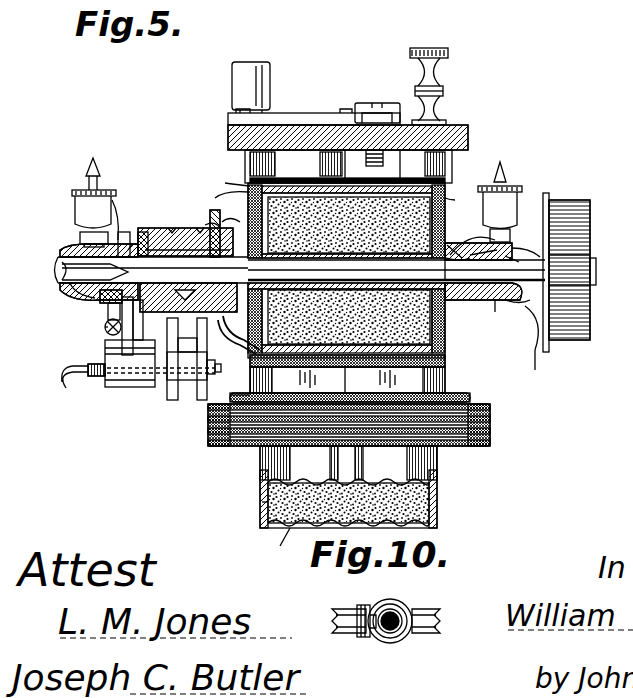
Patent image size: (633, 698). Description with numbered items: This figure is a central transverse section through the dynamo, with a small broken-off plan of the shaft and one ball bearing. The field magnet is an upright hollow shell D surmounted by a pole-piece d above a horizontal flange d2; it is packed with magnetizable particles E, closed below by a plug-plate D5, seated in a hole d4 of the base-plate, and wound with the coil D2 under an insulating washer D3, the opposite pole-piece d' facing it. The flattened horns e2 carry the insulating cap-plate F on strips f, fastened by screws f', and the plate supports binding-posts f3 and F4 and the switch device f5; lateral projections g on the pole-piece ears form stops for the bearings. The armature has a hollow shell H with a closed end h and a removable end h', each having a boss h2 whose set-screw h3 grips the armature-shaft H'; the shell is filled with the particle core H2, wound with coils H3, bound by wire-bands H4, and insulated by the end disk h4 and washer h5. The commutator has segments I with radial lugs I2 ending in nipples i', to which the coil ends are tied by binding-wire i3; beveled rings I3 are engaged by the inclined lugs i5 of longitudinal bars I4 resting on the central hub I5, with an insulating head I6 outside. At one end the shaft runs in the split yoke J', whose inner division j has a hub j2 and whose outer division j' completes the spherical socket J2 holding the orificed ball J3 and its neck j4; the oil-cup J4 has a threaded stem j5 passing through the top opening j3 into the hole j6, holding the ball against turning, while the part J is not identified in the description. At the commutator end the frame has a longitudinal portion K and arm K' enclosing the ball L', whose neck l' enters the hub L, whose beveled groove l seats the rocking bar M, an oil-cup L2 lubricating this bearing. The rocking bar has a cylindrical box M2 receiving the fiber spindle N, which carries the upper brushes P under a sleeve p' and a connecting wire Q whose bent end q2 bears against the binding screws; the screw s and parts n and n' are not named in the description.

In FIG. 5, the armature-shaft H' is at (300, 270).
In FIG. 10, the armature-shaft H' is at (394, 629).
In FIG. 5, the armature-core H2 is at (330, 190).
In FIG. 5, the removable end of armature shell h' is at (362, 320).
In FIG. 5, the cap-plate F is at (332, 129).
In FIG. 5, the binding-post F4 is at (247, 57).
In FIG. 5, the slots or holes in upper base-plate d4 is at (271, 53).
In FIG. 5, the plug-plate or cover D5 is at (215, 6).
In FIG. 5, the screw s is at (440, 92).
In FIG. 5, the binding-post f3 is at (447, 75).
In FIG. 5, the horns of pole-pieces e2 is at (452, 172).
In FIG. 5, the wheel J is at (578, 272).
In FIG. 5, the threaded orifice in ball j6 is at (596, 270).
In FIG. 10, the threaded orifice in ball j6 is at (398, 614).
In FIG. 5, the spherical chamber or socket J2 is at (590, 298).
In FIG. 5, the threaded stem or nipple of oil-cup j5 is at (560, 262).
In FIG. 5, the oil-cup J4 is at (508, 190).
In FIG. 5, the top-opening of yoke j3 is at (490, 241).
In FIG. 5, the outer division of yoke j' is at (527, 252).
In FIG. 5, the central hub or annular flange j2 is at (480, 255).
In FIG. 5, the annular extension or neck of ball j4 is at (512, 258).
In FIG. 10, the annular extension or neck of ball j4 is at (364, 640).
In FIG. 5, the insulating-washer h5 is at (470, 250).
In FIG. 5, the set-screws h3 is at (450, 250).
In FIG. 5, the bosses h2 is at (455, 305).
In FIG. 5, the curved yoke or frame J' is at (517, 309).
In FIG. 5, the inner division of yoke j is at (497, 313).
In FIG. 5, the armature coils H3 is at (337, 390).
In FIG. 5, the spherical filling or ball J3 is at (536, 364).
In FIG. 10, the spherical filling or ball J3 is at (384, 636).
In FIG. 5, the armature shell or cylinder H is at (462, 142).
In FIG. 5, the insulating strip or bar f is at (482, 144).
In FIG. 5, the screws f' is at (323, 104).
In FIG. 5, the shunt or switch device f5 is at (282, 120).
In FIG. 5, the oil-cup L2 is at (82, 202).
In FIG. 5, the beveled groove l is at (118, 198).
In FIG. 5, the circular hub or flange L is at (121, 230).
In FIG. 5, the commutator segment I is at (195, 228).
In FIG. 5, the beveled rings I3 is at (165, 228).
In FIG. 5, the lugs or shanks I2 is at (146, 216).
In FIG. 5, the upper brushes P is at (178, 228).
In FIG. 5, the insulating head or washer I6 is at (128, 250).
In FIG. 5, the binding-wire i3 is at (212, 222).
In FIG. 5, the tapered extension or nipple i' is at (210, 189).
In FIG. 5, the closed end of armature shell h is at (229, 185).
In FIG. 5, the longitudinal portion of bearing frame K is at (86, 266).
In FIG. 5, the transverse arm of bearing frame K' is at (66, 297).
In FIG. 5, the annular extension or neck of ball l' is at (37, 279).
In FIG. 5, the inclined lugs i5 is at (105, 300).
In FIG. 5, the spherical filling or ball L' is at (79, 325).
In FIG. 5, the central hub I5 is at (135, 360).
In FIG. 5, the bars or ribs I4 is at (128, 390).
In FIG. 5, the cylindrical box M2 is at (140, 388).
In FIG. 5, the rocking bar or yoke M is at (133, 325).
In FIG. 5, the screw n is at (102, 319).
In FIG. 5, the screw n' is at (100, 332).
In FIG. 5, the fiber-spindle N is at (175, 385).
In FIG. 5, the sleeve p' is at (196, 379).
In FIG. 5, the bent end of wire q2 is at (221, 370).
In FIG. 5, the connecting-wire Q is at (90, 372).
In FIG. 5, the insulating end-piece or disk h4 is at (240, 342).
In FIG. 5, the wire-bands H4 is at (232, 400).
In FIG. 5, the pole-piece d is at (371, 374).
In FIG. 5, the horizontal flange d2 is at (470, 397).
In FIG. 5, the insulating-washer D3 is at (492, 412).
In FIG. 5, the field-magnet coil D2 is at (445, 448).
In FIG. 5, the hollow shell or cell D is at (260, 502).
In FIG. 5, the magnetizable material E is at (272, 554).
In FIG. 5, the pole-piece d' is at (625, 413).
In FIG. 5, the lateral projections or flanges g is at (621, 60).